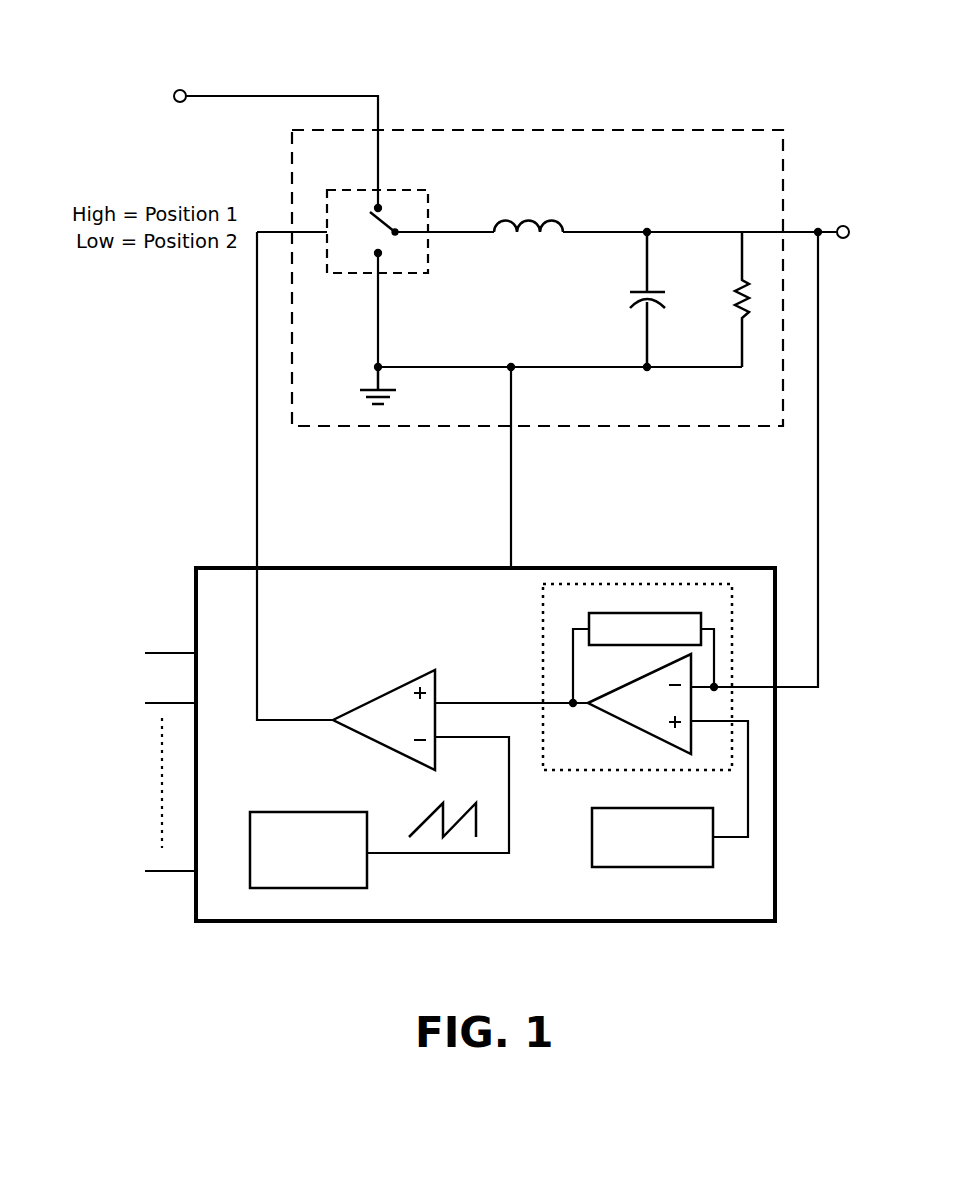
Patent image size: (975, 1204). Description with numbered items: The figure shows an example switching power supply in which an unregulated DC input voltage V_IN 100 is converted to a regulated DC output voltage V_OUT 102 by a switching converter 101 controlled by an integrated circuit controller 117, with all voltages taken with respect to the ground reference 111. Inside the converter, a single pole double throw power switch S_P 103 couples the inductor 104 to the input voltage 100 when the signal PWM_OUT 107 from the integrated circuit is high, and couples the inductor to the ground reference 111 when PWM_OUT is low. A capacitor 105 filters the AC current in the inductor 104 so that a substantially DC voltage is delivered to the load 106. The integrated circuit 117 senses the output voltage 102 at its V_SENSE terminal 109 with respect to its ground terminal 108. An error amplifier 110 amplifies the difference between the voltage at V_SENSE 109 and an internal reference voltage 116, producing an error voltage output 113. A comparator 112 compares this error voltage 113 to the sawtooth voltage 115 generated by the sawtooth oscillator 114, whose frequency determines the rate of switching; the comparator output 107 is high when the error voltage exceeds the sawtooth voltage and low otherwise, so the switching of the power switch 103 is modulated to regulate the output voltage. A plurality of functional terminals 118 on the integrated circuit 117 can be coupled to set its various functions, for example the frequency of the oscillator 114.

The input voltage V_IN 100 is at (218, 92).
The switching converter 101 is at (572, 128).
The output voltage V_OUT 102 is at (835, 222).
The power switch S_P 103 is at (437, 258).
The inductor 104 is at (525, 200).
The capacitor 105 is at (625, 291).
The load 106 is at (730, 291).
The PWM_OUT signal 107 is at (248, 434).
The ground terminal GND 108 is at (503, 514).
The V_SENSE terminal 109 is at (825, 510).
The error amplifier 110 is at (540, 628).
The ground reference 111 is at (370, 362).
The comparator 112 is at (388, 680).
The error voltage output 113 is at (500, 690).
The sawtooth oscillator 114 is at (310, 811).
The sawtooth voltage V_F 115 is at (443, 860).
The reference voltage 116 is at (590, 840).
The integrated circuit controller 117 is at (628, 927).
The functional terminals 118 is at (108, 677).